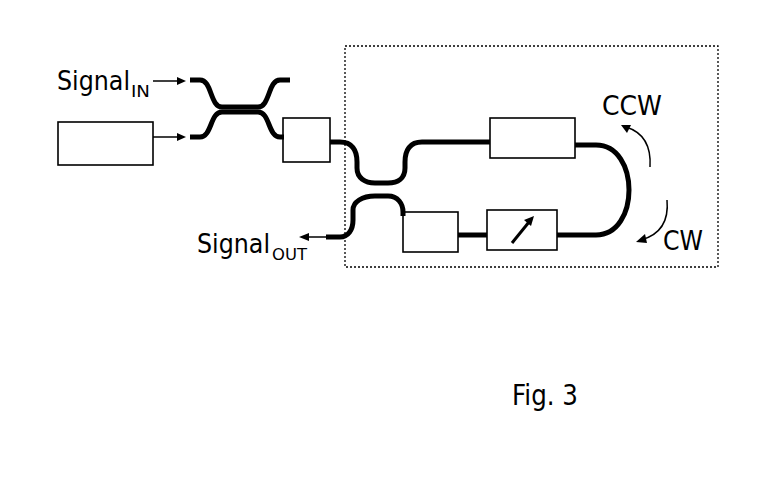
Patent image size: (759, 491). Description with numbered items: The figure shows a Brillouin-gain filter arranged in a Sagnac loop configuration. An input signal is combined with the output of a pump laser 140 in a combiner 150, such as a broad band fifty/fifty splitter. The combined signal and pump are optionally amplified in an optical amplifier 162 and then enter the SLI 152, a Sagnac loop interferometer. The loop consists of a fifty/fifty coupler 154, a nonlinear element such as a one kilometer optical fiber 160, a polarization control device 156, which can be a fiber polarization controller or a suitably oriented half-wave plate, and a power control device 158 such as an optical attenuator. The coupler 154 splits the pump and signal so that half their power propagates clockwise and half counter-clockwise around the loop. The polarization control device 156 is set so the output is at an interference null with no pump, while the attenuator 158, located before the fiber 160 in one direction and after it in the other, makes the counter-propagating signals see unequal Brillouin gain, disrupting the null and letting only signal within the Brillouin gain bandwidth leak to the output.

The pump laser 140 is at (122, 161).
The combiner 150 is at (240, 91).
The SLI 152 is at (531, 139).
The 50/50 coupler 154 is at (408, 175).
The polarization control device 156 is at (445, 220).
The power control device 158 is at (522, 217).
The optical fiber 160 is at (532, 124).
The optical amplifier 162 is at (306, 158).